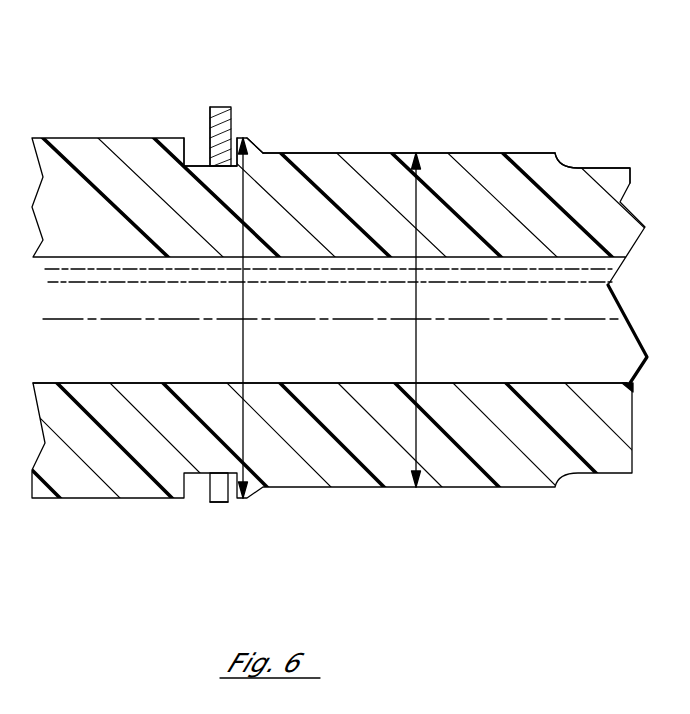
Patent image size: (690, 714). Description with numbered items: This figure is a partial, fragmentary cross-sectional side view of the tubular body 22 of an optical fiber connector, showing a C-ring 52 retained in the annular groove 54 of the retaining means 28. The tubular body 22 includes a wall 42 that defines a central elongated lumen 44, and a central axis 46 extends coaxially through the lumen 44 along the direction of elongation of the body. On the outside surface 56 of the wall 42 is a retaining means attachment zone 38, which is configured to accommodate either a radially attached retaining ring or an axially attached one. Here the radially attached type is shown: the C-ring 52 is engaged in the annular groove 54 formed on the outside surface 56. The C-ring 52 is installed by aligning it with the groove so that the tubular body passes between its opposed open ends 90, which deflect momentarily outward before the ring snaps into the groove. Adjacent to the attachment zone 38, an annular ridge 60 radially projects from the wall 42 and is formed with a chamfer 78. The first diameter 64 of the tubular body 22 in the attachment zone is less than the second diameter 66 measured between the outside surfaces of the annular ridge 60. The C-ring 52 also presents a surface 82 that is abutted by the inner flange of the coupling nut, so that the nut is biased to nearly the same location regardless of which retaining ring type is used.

The tubular body 22 is at (535, 147).
The retaining means 28 is at (377, 117).
The retaining means attachment zone 38 is at (247, 97).
The wall 42 is at (570, 188).
The central elongated lumen 44 is at (563, 383).
The central axis 46 is at (560, 320).
The C-ring 52 is at (213, 97).
The annular groove 54 is at (187, 495).
The outside surface 56 is at (490, 153).
The annular ridge 60 is at (247, 138).
The first diameter 64 is at (418, 432).
The second diameter 66 is at (240, 350).
The chamfer 78 is at (262, 148).
The surface 82 is at (210, 125).
The opposed open ends 90 is at (222, 494).